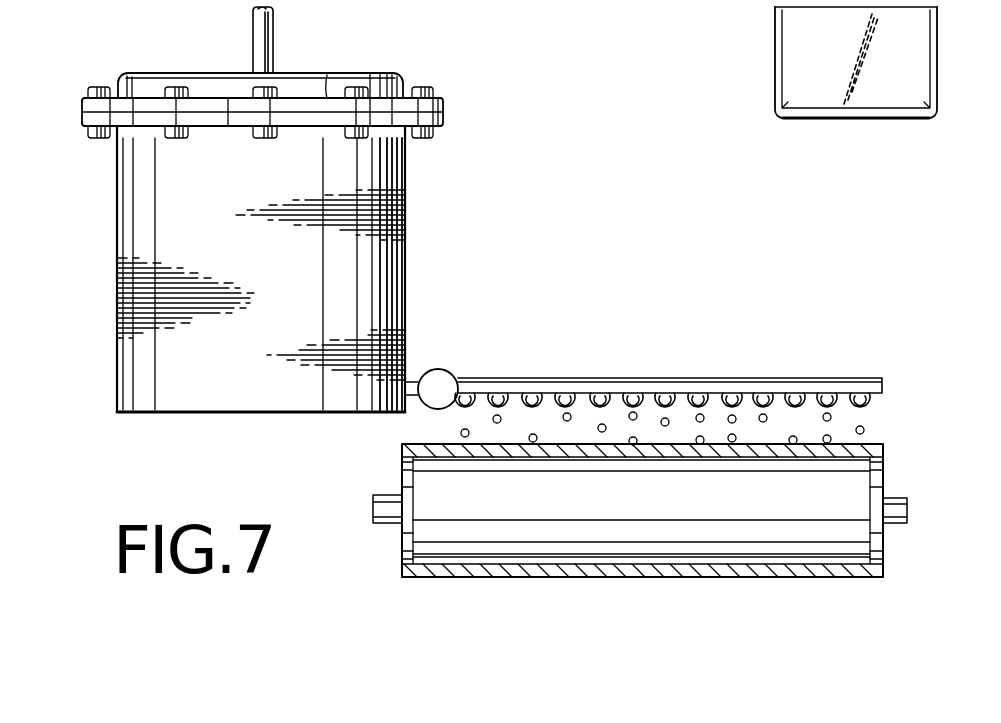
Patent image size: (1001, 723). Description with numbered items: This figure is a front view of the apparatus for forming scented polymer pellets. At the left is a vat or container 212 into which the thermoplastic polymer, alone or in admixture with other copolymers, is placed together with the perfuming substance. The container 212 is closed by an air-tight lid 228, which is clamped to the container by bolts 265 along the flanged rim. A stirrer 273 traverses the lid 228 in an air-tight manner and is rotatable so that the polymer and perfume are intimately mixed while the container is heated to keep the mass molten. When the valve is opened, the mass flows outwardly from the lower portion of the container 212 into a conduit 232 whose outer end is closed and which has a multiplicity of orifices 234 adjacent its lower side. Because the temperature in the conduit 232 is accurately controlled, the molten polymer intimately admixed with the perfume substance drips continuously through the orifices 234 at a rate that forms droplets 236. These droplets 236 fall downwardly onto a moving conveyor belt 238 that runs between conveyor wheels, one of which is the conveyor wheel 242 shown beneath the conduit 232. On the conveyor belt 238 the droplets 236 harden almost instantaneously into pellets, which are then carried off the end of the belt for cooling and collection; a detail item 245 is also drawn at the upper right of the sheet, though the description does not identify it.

The container 212 is at (112, 288).
The lid 228 is at (147, 80).
The bolts 265 is at (100, 88).
The stirrer 273 is at (267, 36).
The conduit 232 is at (718, 378).
The orifices 234 is at (565, 392).
The droplets 236 is at (636, 412).
The conveyor belt 238 is at (702, 570).
The conveyor wheel 242 is at (672, 507).
The coated sheet 245 is at (875, 103).